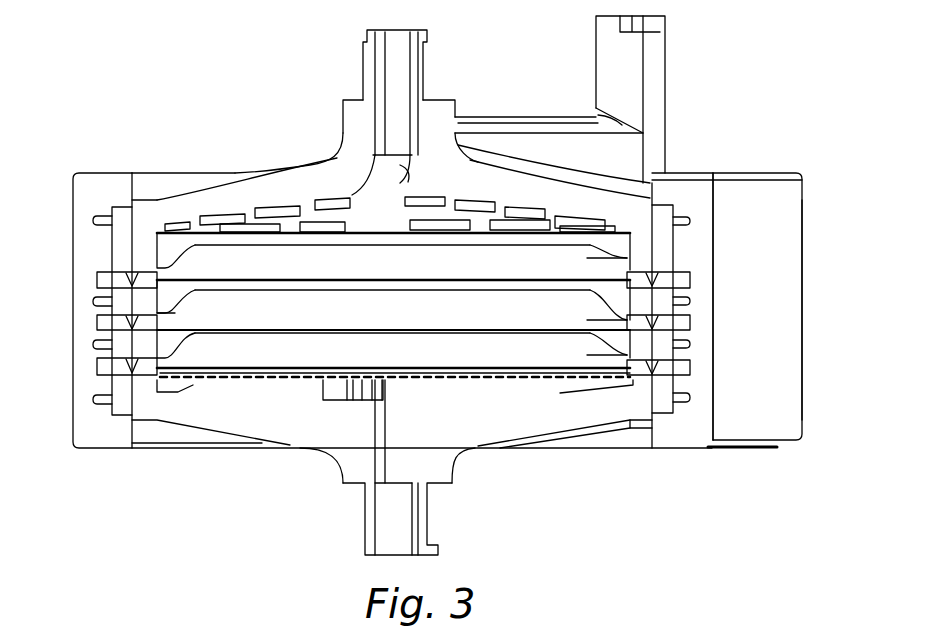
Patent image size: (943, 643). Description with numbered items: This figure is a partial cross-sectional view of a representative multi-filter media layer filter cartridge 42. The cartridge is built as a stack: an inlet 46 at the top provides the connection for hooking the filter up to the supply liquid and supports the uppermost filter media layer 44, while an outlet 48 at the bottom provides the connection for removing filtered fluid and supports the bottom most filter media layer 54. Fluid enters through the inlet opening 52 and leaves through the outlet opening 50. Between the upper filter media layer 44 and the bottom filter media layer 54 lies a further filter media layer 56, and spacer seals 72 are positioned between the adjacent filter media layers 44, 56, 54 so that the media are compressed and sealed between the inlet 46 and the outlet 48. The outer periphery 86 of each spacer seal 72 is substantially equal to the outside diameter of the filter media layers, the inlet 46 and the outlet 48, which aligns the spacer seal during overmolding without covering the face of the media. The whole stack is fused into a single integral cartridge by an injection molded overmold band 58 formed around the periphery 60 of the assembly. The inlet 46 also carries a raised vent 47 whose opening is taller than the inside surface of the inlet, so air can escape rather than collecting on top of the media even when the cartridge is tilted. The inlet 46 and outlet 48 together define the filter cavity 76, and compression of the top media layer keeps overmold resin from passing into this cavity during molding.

The multi-filter media layer filter cartridge 42 is at (722, 45).
The filter media layer 44 is at (590, 258).
The inlet 46 is at (275, 178).
The raised vent 47 is at (618, 68).
The outlet 48 is at (463, 426).
The outlet opening 50 is at (397, 527).
The inlet opening 52 is at (395, 50).
The bottom most filter media layer 54 is at (590, 355).
The filter media layer 56 is at (590, 320).
The overmold band 58 is at (777, 386).
The periphery 60 is at (86, 320).
The spacer seal 72 is at (122, 297).
The filter cavity 76 is at (491, 301).
The outer periphery 86 is at (97, 303).